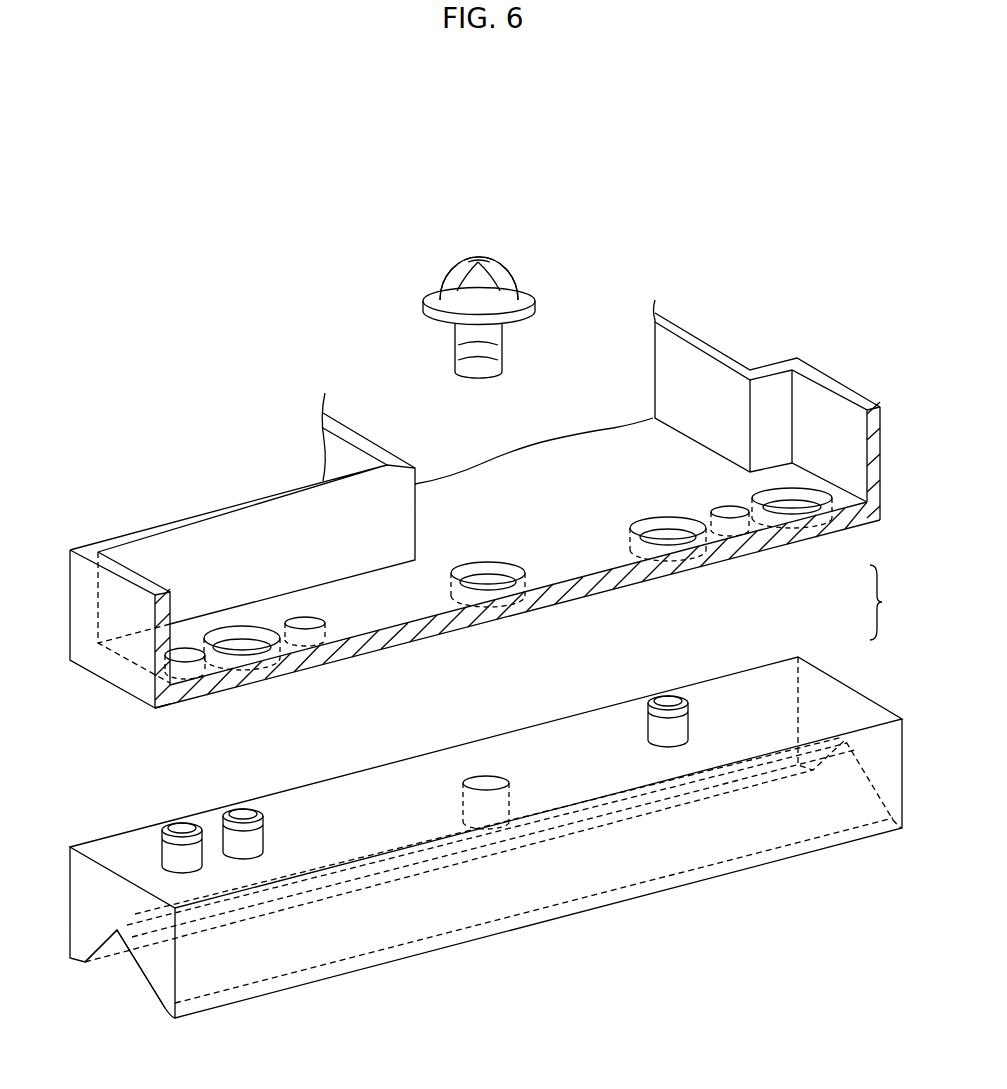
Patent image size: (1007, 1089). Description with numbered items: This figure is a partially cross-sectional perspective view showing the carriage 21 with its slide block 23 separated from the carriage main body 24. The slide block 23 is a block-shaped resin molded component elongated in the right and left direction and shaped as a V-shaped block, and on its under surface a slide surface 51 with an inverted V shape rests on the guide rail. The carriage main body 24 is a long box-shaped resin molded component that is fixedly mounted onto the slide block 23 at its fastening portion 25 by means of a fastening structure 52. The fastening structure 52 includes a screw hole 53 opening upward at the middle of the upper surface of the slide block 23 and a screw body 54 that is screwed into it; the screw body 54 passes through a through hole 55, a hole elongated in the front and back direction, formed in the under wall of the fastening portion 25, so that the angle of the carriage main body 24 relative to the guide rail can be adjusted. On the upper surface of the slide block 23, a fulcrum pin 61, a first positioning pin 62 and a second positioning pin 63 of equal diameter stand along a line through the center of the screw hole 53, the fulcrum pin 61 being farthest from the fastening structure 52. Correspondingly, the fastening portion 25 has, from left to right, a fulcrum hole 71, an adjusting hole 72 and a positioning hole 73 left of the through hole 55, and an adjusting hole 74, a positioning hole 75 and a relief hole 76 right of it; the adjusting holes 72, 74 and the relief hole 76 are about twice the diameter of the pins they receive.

The carriage 21 is at (892, 602).
The slide block 23 is at (847, 684).
The carriage main body 24 is at (475, 525).
The fastening portion 25 is at (88, 680).
The slide surface 51 is at (123, 948).
The fastening structure 52 is at (479, 278).
The screw hole 53 is at (480, 782).
The screw body 54 is at (478, 259).
The through hole 55 is at (485, 575).
The fulcrum pin 61 is at (161, 845).
The first positioning pin 62 is at (264, 830).
The second positioning pin 63 is at (648, 718).
The fulcrum hole 71 is at (184, 652).
The adjusting hole 72 is at (242, 637).
The positioning hole 73 is at (306, 622).
The adjusting hole 74 is at (660, 528).
The positioning hole 75 is at (730, 512).
The relief hole 76 is at (806, 502).